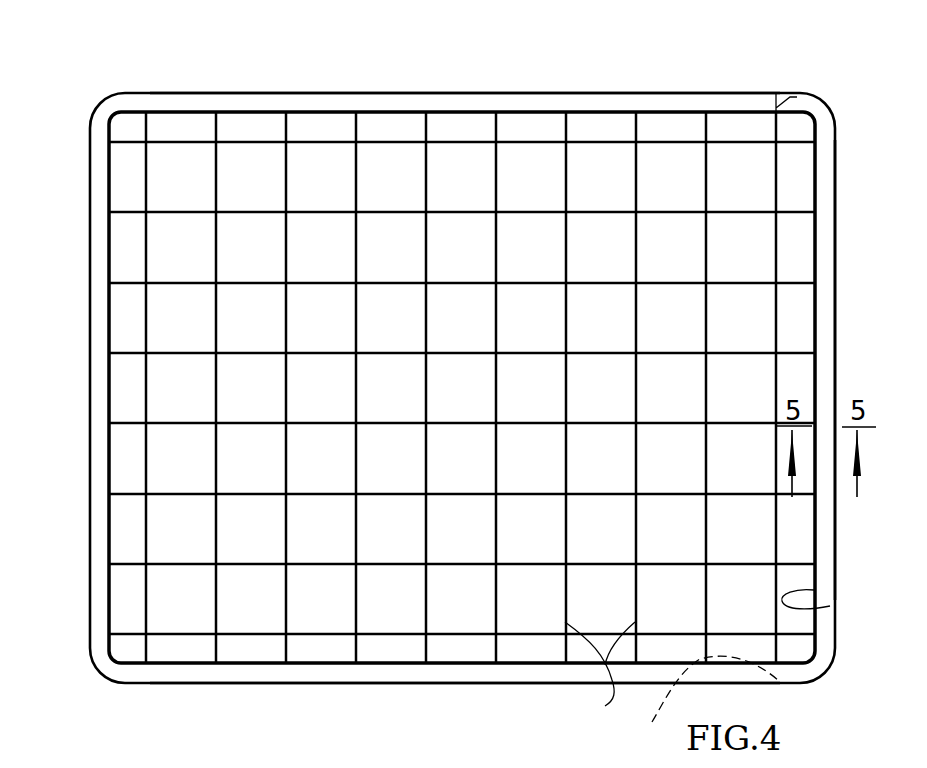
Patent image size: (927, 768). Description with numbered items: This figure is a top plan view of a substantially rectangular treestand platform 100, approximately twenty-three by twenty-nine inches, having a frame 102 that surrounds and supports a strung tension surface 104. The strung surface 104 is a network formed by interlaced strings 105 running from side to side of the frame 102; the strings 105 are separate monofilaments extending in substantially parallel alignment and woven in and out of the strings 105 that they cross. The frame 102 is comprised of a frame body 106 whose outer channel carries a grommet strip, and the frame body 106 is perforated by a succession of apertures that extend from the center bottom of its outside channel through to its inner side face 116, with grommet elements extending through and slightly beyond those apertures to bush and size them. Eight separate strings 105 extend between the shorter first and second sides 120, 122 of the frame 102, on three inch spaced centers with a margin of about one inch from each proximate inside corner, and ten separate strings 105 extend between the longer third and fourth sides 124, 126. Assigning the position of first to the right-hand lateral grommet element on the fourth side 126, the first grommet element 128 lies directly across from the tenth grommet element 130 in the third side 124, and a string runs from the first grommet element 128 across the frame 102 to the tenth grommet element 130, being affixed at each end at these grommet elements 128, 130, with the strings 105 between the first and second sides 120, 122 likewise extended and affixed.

The treestand platform 100 is at (218, 58).
The frame 102 is at (478, 92).
The strung tension surface 104 is at (275, 185).
The strings 105 is at (605, 706).
The frame body 106 is at (823, 239).
The inner side face 116 is at (830, 606).
The first side 120 is at (88, 545).
The second side 122 is at (835, 178).
The third side 124 is at (222, 684).
The fourth side 126 is at (418, 100).
The first grommet element 128 is at (795, 91).
The tenth grommet element 130 is at (652, 722).